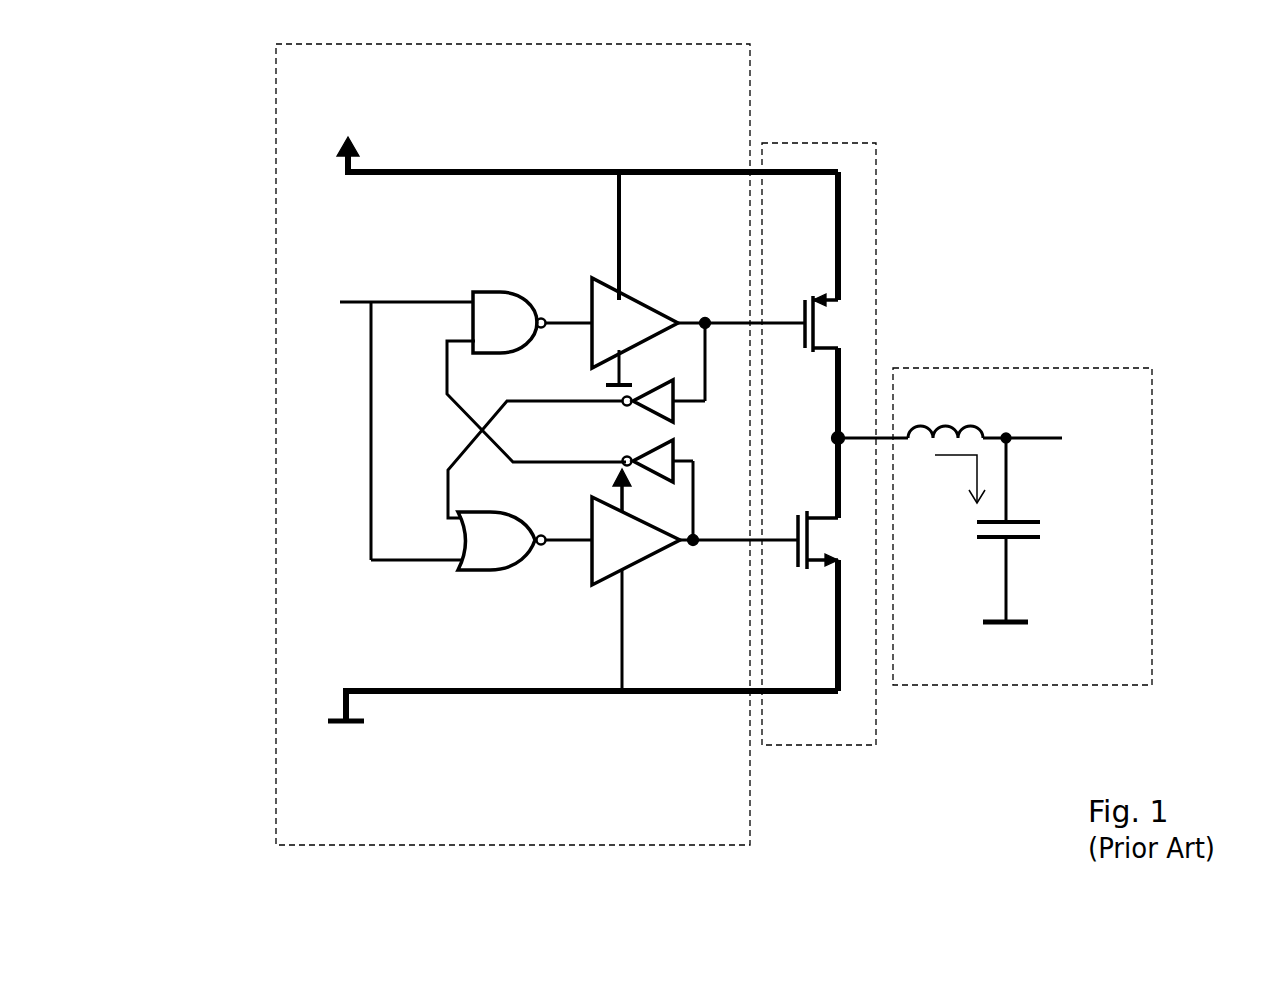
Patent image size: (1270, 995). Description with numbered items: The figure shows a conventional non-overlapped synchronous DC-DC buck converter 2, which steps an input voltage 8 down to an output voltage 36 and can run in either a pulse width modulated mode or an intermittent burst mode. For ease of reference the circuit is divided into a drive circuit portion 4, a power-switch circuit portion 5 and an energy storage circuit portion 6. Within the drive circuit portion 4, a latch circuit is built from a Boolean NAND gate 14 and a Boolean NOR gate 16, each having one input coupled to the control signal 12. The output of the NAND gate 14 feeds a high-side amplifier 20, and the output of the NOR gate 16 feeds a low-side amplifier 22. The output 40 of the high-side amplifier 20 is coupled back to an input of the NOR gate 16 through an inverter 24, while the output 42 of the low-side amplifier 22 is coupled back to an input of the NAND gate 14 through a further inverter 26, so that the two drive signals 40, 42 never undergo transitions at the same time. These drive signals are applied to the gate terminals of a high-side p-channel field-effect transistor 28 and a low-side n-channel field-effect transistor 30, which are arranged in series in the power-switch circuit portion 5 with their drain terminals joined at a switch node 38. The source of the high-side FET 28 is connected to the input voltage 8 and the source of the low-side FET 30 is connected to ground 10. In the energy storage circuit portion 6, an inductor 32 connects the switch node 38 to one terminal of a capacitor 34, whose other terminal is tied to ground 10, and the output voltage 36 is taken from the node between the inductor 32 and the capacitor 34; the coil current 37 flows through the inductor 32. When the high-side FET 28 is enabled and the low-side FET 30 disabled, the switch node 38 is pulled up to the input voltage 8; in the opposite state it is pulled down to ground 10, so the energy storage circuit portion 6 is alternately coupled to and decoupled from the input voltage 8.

The synchronous DC-DC buck converter 2 is at (209, 127).
The drive circuit portion 4 is at (751, 110).
The power-switch circuit portion 5 is at (878, 185).
The energy storage circuit portion 6 is at (1040, 366).
The input voltage 8 is at (346, 143).
The ground 10 is at (348, 724).
The control signal 12 is at (386, 423).
The NAND gate 14 is at (483, 294).
The NOR gate 16 is at (500, 572).
The high-side amplifier 20 is at (645, 302).
The low-side amplifier 22 is at (655, 553).
The inverter 24 is at (675, 410).
The further inverter 26 is at (673, 447).
The high-side p-channel field-effect transistor 28 is at (806, 300).
The low-side n-channel field-effect transistor 30 is at (827, 563).
The inductor 32 is at (943, 425).
The capacitor 34 is at (985, 540).
The output voltage 36 is at (1062, 440).
The coil current 37 is at (948, 457).
The switch node 38 is at (842, 434).
The output of the high-side amplifier 40 is at (720, 320).
The output of the low-side amplifier 42 is at (698, 550).